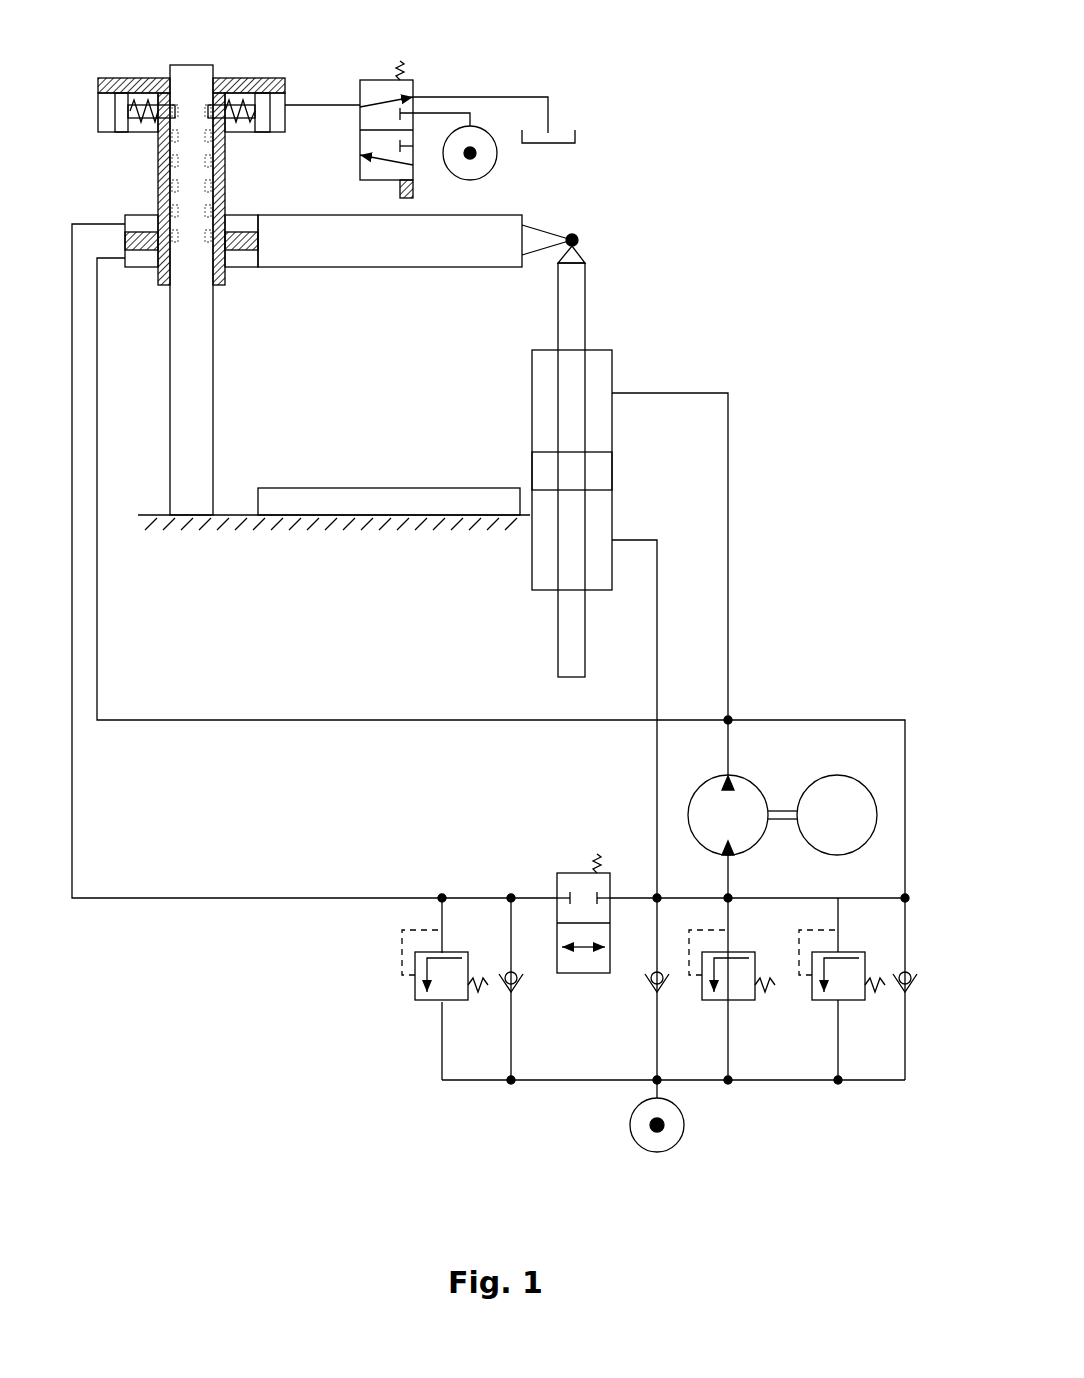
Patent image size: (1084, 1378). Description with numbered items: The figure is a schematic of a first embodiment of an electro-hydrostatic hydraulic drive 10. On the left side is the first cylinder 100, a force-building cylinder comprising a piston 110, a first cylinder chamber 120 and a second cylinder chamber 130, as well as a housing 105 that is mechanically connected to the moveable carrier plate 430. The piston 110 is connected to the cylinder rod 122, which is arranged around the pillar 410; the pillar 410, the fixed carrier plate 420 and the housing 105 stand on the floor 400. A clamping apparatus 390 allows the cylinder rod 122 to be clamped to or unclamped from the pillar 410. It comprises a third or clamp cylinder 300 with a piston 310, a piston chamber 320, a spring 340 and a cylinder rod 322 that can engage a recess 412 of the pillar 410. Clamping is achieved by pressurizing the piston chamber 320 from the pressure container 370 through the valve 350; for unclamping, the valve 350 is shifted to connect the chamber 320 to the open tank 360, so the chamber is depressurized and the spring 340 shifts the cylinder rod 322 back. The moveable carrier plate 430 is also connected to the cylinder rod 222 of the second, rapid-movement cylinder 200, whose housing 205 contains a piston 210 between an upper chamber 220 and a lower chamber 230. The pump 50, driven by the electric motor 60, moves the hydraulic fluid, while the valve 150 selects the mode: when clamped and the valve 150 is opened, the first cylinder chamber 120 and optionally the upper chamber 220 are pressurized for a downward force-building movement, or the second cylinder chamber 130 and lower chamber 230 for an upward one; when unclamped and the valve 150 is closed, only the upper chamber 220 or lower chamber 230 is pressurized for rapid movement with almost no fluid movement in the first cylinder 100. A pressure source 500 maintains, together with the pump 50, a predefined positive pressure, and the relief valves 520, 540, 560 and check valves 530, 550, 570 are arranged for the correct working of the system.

The hydraulic drive 10 is at (710, 98).
The pump 50 is at (758, 790).
The electric motor 60 is at (840, 778).
The first cylinder 100 is at (210, 257).
The housing of the first cylinder 105 is at (273, 225).
The piston 110 is at (133, 238).
The first cylinder chamber 120 is at (237, 258).
The cylinder rod 122 is at (158, 155).
The second cylinder chamber 130 is at (242, 225).
The 2-port/2-way control valve 150 is at (562, 868).
The second cylinder 200 is at (574, 461).
The housing of the second cylinder 205 is at (530, 360).
The piston 210 is at (597, 475).
The first cylinder chamber 220 is at (597, 430).
The cylinder rod 222 is at (568, 330).
The second cylinder chamber 230 is at (597, 520).
The third cylinder 300 is at (229, 111).
The piston 310 is at (260, 118).
The piston chamber 320 is at (265, 122).
The cylinder rod 322 is at (242, 108).
The spring 340 is at (230, 100).
The 3-port/2-way control valve 350 is at (373, 72).
The open tank 360 is at (570, 118).
The pressure container 370 is at (502, 170).
The clamping apparatus 390 is at (208, 98).
The floor 400 is at (334, 543).
The pillar 410 is at (195, 430).
The recess 412 is at (175, 112).
The fixed carrier plate 420 is at (340, 500).
The moveable carrier plate 430 is at (418, 241).
The pressure source 500 is at (698, 1138).
The relief valve 520 is at (432, 1007).
The check valve 530 is at (522, 1000).
The relief valve 540 is at (713, 1007).
The check valve 550 is at (648, 1000).
The relief valve 560 is at (827, 1007).
The check valve 570 is at (898, 995).